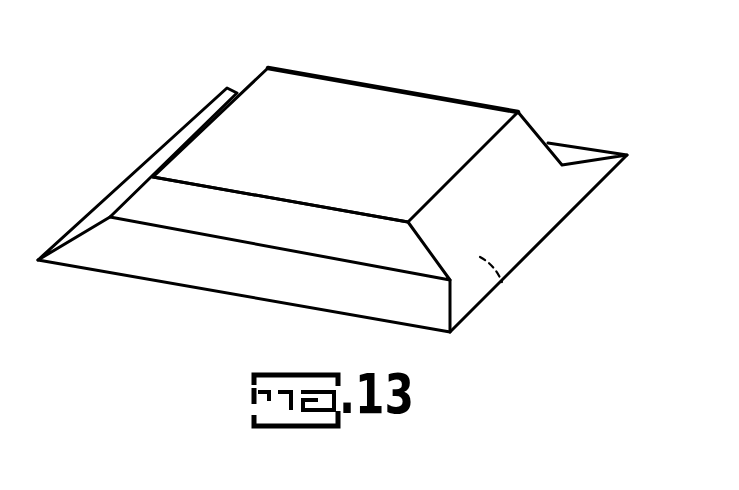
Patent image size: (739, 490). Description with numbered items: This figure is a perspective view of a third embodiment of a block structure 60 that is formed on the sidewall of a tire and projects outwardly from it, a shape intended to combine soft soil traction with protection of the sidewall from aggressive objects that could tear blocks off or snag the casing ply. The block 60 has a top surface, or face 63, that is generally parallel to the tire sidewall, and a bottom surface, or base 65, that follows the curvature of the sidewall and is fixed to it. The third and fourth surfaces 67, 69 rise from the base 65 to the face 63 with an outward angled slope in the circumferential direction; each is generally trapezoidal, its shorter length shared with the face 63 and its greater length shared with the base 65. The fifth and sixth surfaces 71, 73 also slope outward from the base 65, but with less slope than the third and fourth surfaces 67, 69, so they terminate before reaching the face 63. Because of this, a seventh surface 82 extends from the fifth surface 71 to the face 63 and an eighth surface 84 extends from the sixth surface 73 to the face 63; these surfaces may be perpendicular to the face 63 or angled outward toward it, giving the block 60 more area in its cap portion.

The block structure 60 is at (537, 50).
The face 63 is at (310, 155).
The base 65 is at (503, 282).
The third surface 67 is at (518, 207).
The fourth surface 69 is at (97, 215).
The fifth surface 71 is at (580, 153).
The sixth surface 73 is at (163, 262).
The seventh surface 82 is at (355, 81).
The eighth surface 84 is at (253, 228).